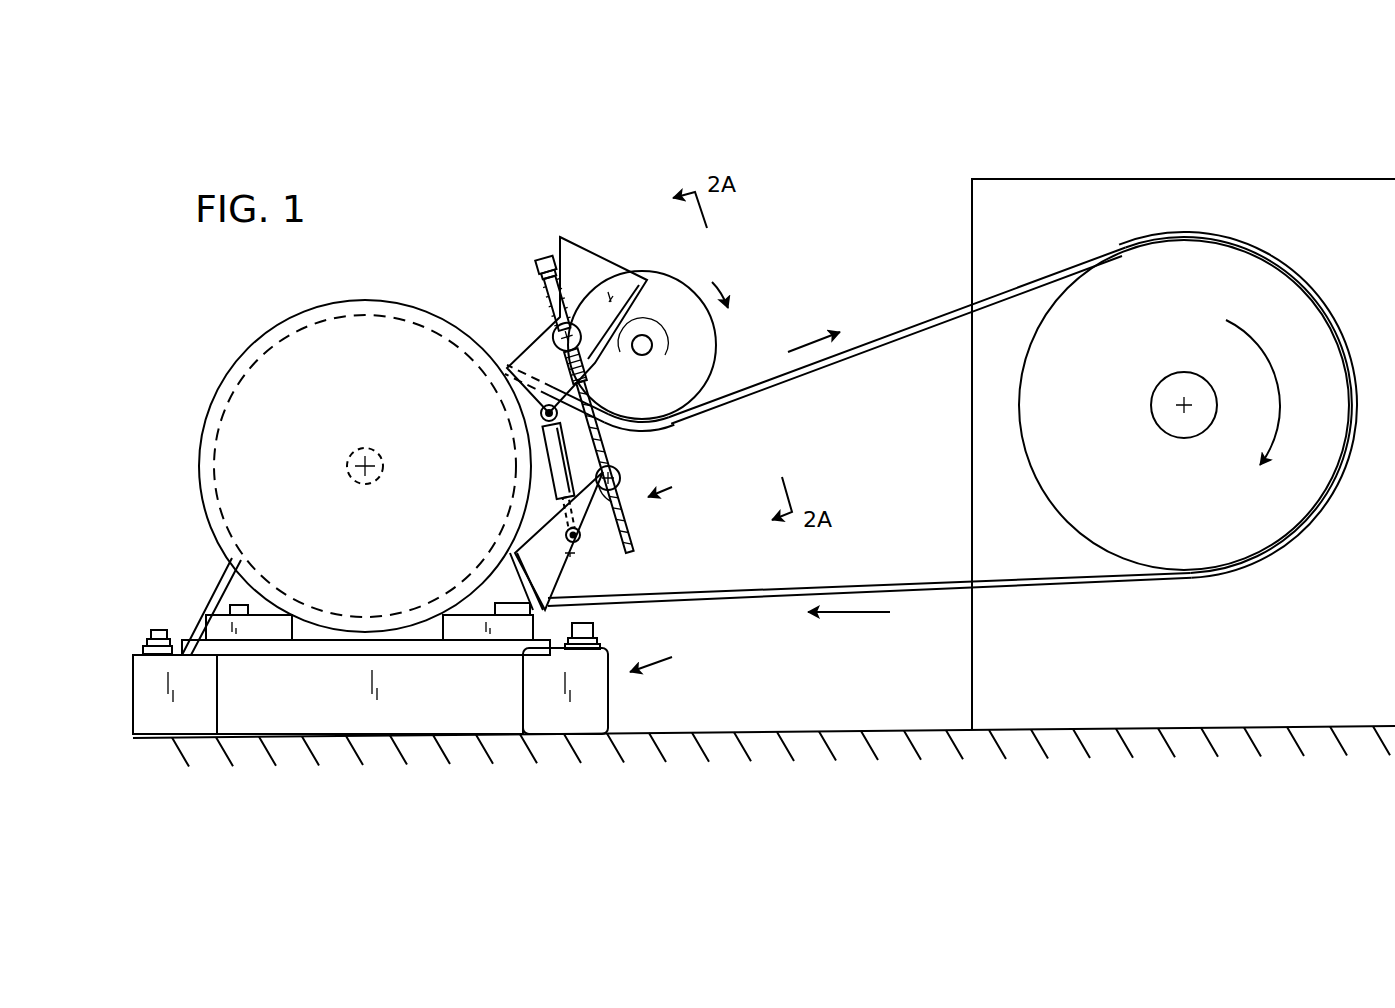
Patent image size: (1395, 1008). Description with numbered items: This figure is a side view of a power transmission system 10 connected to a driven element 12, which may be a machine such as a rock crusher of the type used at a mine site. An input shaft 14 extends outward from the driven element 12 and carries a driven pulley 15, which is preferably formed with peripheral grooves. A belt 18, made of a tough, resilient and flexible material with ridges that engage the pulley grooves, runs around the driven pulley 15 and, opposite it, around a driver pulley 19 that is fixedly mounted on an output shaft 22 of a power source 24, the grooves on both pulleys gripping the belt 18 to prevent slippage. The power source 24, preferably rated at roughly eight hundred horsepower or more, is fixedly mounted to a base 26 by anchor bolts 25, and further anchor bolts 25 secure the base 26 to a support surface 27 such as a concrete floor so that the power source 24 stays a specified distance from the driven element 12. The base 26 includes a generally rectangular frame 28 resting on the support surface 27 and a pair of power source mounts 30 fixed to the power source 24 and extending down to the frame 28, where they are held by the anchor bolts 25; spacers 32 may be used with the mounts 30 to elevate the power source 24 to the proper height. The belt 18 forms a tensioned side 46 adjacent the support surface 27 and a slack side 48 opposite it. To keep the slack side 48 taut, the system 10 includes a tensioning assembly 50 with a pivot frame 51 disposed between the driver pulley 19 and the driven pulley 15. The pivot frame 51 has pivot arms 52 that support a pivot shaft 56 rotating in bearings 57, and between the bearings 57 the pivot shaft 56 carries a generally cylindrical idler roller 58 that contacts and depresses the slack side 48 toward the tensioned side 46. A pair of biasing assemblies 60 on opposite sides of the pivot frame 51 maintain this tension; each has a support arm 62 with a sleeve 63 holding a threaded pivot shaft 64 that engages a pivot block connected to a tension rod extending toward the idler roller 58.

The power transmission system 10 is at (815, 265).
The driven element 12 is at (1018, 177).
The input shaft 14 is at (1162, 427).
The driven pulley 15 is at (1226, 240).
The belt 18 is at (893, 323).
The driver pulley 19 is at (403, 318).
The output shaft 22 is at (348, 463).
The power source 24 is at (357, 295).
The anchor bolts 25 is at (237, 606).
The base 26 is at (446, 637).
The support surface 27 is at (815, 731).
The rectangular frame 28 is at (608, 704).
The power source mounts 30 is at (240, 592).
The spacers 32 is at (218, 645).
The tensioned side 46 is at (870, 631).
The slack side 48 is at (813, 370).
The tensioning assembly 50 is at (575, 216).
The pivot frame 51 is at (524, 340).
The pivot arms 52 is at (538, 330).
The pivot shaft 56 is at (650, 338).
The bearings 57 is at (657, 353).
The idler roller 58 is at (712, 348).
The biasing assemblies 60 is at (627, 473).
The support arm 62 is at (560, 577).
The sleeve 63 is at (627, 540).
The threaded pivot shaft 64 is at (620, 502).